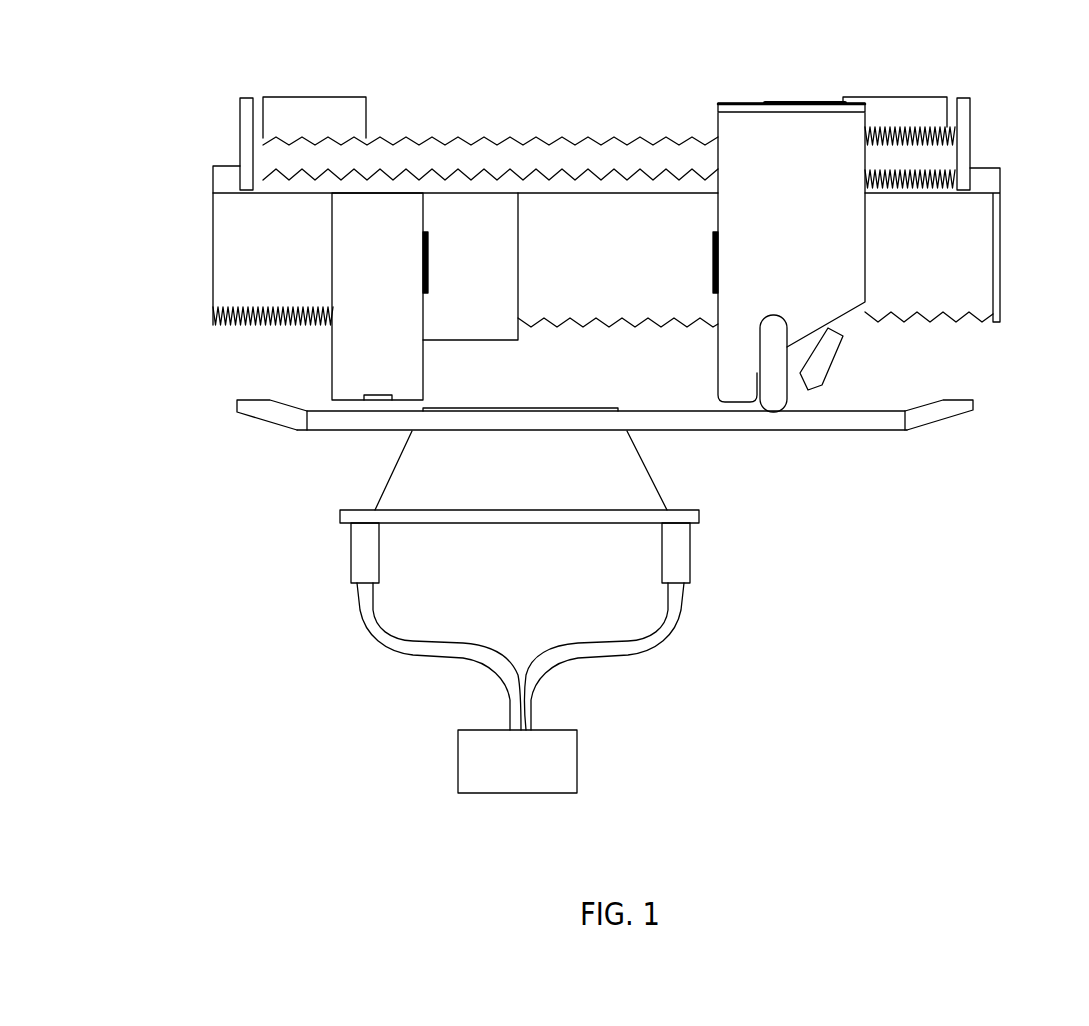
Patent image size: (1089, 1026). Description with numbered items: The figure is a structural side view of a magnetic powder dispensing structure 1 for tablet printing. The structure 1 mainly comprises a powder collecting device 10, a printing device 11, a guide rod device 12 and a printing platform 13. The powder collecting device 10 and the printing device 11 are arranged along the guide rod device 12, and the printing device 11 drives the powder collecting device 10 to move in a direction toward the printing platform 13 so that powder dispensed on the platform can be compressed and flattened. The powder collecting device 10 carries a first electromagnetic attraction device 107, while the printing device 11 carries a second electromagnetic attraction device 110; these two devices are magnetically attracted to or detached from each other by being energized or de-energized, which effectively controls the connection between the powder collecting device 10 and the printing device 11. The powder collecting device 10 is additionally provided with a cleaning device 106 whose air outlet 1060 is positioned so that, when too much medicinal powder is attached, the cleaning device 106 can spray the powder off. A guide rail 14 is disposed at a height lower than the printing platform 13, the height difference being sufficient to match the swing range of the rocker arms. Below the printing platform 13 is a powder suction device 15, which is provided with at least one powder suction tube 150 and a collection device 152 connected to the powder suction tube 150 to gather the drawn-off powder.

The magnetic powder dispensing structure 1 is at (108, 152).
The powder collecting device 10 is at (792, 132).
The cleaning device 106 is at (825, 347).
The air outlet 1060 is at (803, 391).
The first electromagnetic attraction device 107 is at (716, 253).
The printing device 11 is at (348, 347).
The second electromagnetic attraction device 110 is at (428, 243).
The guide rod device 12 is at (565, 155).
The printing platform 13 is at (408, 485).
The guide rail 14 is at (872, 425).
The powder suction device 15 is at (775, 711).
The powder suction tube 150 is at (635, 642).
The collection device 152 is at (567, 755).